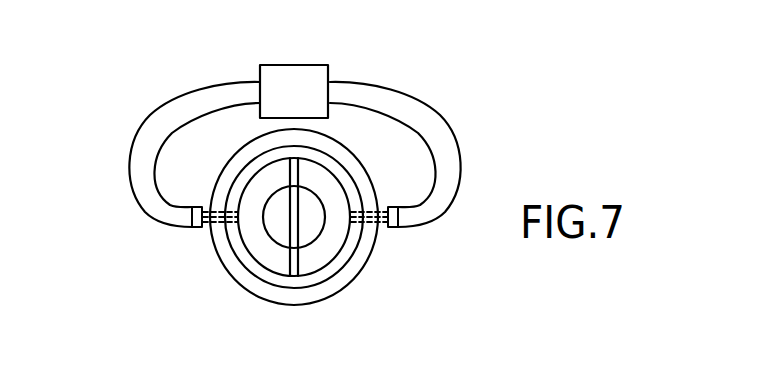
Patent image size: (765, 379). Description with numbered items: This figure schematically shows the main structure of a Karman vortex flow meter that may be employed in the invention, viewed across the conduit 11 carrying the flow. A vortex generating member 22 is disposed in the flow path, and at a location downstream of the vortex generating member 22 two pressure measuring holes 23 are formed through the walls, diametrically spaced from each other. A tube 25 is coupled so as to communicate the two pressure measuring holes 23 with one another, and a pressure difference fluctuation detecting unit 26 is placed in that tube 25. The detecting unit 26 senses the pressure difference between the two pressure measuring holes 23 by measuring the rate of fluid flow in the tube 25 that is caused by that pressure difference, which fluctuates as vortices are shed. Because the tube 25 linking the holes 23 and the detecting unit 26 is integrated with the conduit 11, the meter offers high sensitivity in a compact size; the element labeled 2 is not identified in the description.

The earpiece / hearing device 2 is at (205, 170).
The conduit 11 is at (270, 302).
The vortex generating member 22 is at (295, 227).
The pressure measuring holes 23 is at (223, 220).
The tube 25 is at (183, 117).
The pressure difference fluctuation detecting unit 26 is at (285, 87).